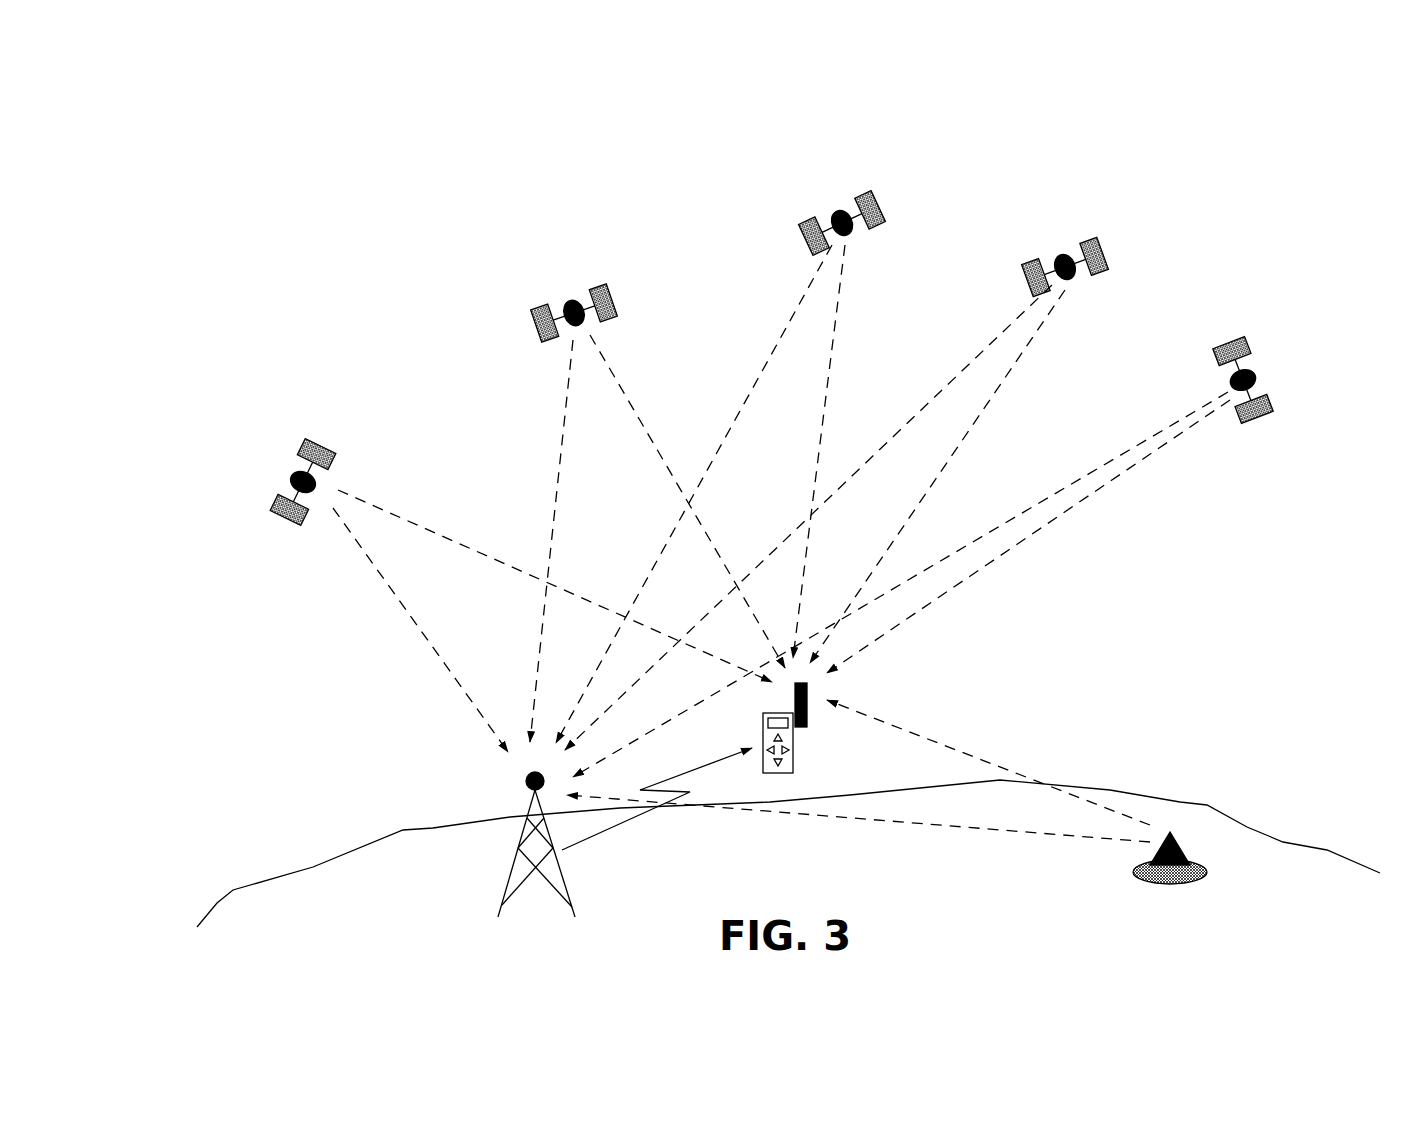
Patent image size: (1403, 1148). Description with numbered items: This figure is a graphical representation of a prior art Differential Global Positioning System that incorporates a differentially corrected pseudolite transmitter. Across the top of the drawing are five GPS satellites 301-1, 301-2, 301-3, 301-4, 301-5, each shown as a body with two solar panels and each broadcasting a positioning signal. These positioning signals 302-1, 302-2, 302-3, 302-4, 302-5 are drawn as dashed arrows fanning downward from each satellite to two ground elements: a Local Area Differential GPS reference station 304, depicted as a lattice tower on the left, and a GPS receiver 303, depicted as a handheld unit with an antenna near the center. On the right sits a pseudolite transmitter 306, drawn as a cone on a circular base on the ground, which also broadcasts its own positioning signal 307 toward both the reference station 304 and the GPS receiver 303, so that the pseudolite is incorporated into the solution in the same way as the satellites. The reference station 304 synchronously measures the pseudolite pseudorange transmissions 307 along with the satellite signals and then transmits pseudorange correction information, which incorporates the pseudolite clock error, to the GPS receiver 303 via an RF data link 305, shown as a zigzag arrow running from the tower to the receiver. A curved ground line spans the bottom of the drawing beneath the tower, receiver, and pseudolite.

The GPS satellite 301-1 is at (332, 425).
The GPS satellite 301-2 is at (585, 277).
The GPS satellite 301-3 is at (853, 192).
The GPS satellite 301-4 is at (1098, 225).
The GPS satellite 301-5 is at (1278, 320).
The positioning signal 302-1 is at (428, 622).
The positioning signal 302-2 is at (578, 402).
The positioning signal 302-3 is at (795, 352).
The positioning signal 302-4 is at (977, 387).
The positioning signal 302-5 is at (1068, 490).
The GPS receiver 303 is at (800, 750).
The LADGPS reference station 304 is at (490, 882).
The RF data link 305 is at (632, 835).
The pseudolite transmitter 306 is at (1220, 885).
The pseudolite positioning signal 307 is at (992, 805).